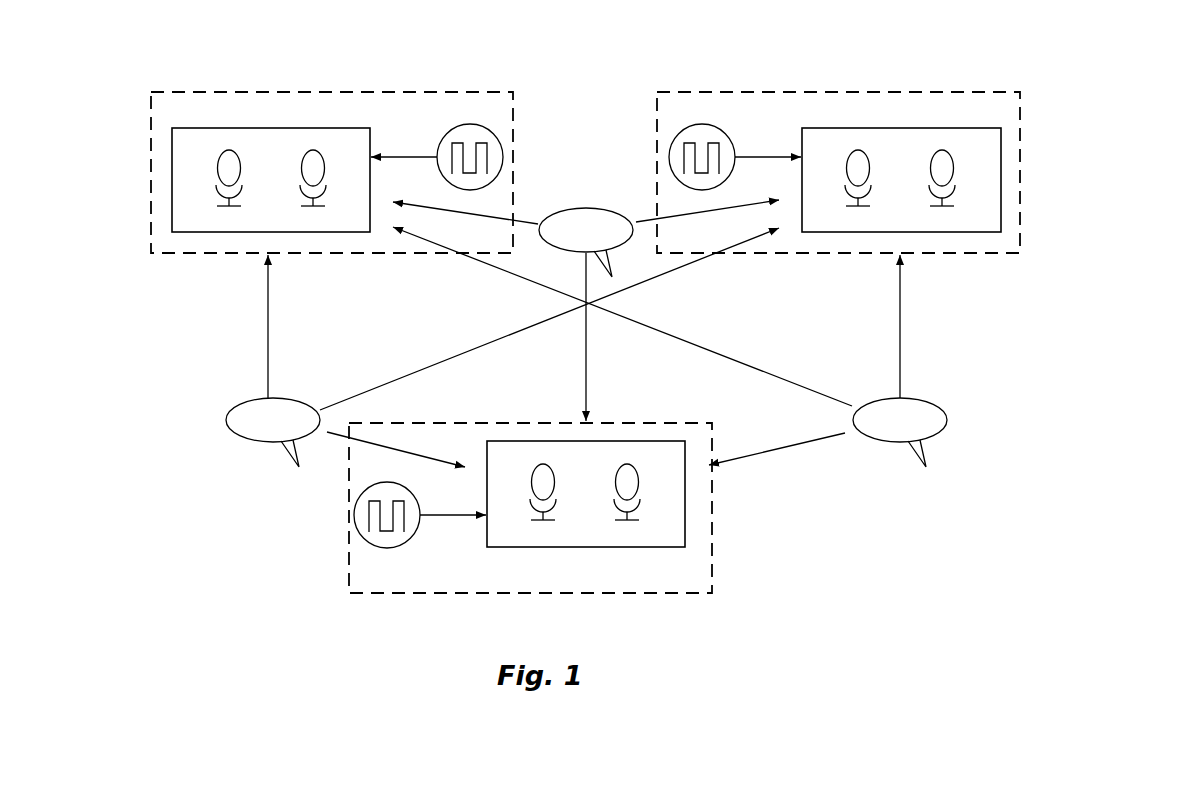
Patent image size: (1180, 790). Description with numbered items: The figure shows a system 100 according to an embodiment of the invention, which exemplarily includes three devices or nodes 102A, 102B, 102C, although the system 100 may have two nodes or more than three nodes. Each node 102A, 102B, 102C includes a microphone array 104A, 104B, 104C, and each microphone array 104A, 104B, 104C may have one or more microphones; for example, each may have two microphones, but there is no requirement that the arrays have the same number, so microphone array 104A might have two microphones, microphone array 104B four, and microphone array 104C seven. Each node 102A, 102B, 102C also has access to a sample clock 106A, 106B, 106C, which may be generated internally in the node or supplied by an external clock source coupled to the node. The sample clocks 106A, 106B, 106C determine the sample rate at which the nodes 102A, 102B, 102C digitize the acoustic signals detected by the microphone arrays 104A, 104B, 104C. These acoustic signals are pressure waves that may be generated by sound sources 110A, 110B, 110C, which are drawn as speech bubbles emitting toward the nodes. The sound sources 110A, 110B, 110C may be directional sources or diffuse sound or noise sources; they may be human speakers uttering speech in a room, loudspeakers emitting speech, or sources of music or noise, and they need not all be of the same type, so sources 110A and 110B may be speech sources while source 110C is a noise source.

The system 100 is at (1166, 72).
The node 102A is at (298, 85).
The node 102B is at (823, 85).
The node 102C is at (722, 567).
The microphone array 104A is at (172, 163).
The microphone array 104B is at (1001, 175).
The microphone array 104C is at (685, 507).
The sample clock 106A is at (504, 151).
The sample clock 106B is at (672, 173).
The sample clock 106C is at (350, 526).
The sound source 110A is at (625, 255).
The sound source 110B is at (948, 418).
The sound source 110C is at (220, 426).